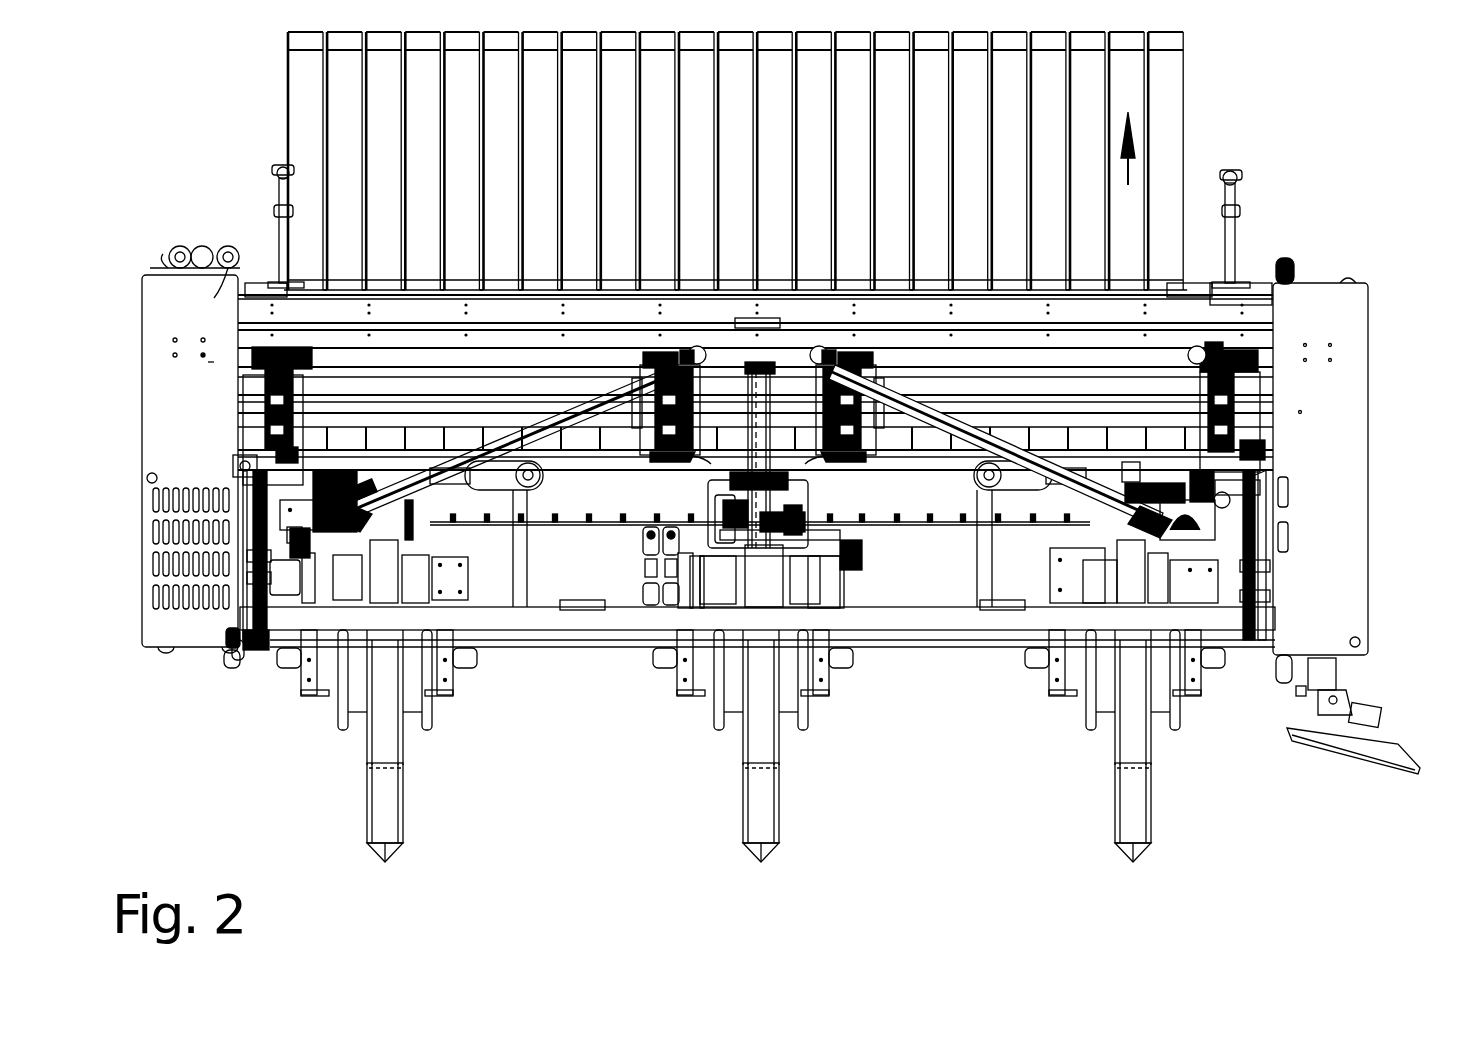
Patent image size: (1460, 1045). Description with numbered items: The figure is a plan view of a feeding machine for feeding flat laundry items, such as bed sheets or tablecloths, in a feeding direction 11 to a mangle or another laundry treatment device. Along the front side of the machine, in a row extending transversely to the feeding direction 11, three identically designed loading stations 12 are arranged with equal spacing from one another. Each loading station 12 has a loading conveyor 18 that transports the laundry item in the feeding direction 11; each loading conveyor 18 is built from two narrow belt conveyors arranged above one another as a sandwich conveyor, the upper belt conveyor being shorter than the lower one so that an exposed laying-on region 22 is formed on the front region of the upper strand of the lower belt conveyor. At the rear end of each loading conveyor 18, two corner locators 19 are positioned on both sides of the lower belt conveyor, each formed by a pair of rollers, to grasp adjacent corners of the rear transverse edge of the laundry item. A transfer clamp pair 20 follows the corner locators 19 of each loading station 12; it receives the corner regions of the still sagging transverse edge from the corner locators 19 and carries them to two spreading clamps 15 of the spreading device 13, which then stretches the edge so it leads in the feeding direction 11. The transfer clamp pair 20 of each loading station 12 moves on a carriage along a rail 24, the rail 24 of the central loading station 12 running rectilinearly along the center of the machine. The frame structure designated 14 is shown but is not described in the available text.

The feeding direction 11 is at (1130, 167).
The loading station 12 is at (456, 822).
The spreading device 13 is at (1135, 355).
The guide rail 14 is at (1197, 338).
The spreading clamp 15 is at (240, 410).
The loading conveyor 18 is at (380, 742).
The corner locator 19 is at (423, 557).
The transfer clamp pair 20 is at (362, 472).
The laying-on region 22 is at (383, 806).
The rail 24 is at (480, 467).